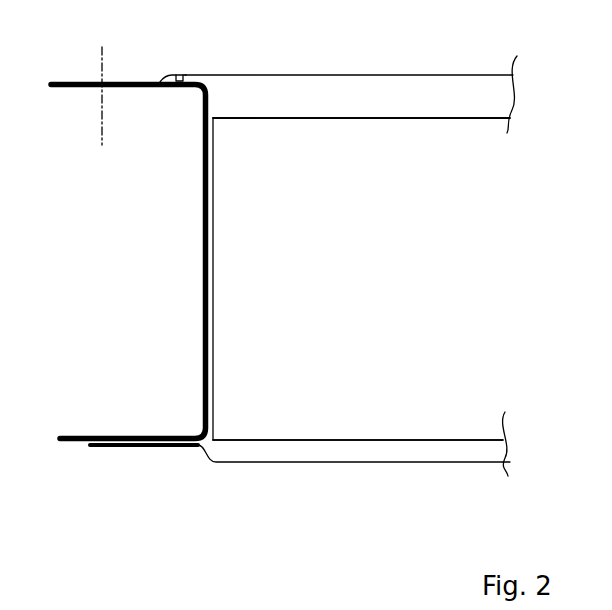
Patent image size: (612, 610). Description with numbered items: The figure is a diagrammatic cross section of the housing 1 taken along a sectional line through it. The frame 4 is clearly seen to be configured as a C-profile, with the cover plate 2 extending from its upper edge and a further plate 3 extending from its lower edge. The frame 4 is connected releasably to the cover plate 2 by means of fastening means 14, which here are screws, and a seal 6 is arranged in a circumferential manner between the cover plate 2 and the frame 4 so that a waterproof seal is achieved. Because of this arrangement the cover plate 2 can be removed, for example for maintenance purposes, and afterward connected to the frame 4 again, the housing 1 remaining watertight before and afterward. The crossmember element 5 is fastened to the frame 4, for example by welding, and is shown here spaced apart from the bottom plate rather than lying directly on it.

The housing 1 is at (433, 276).
The cover plate 2 is at (350, 75).
The lower flange plate 3 is at (343, 463).
The frame 4 is at (203, 265).
The crossmember element 5 is at (347, 118).
The seal 6 is at (180, 75).
The fastening means 14 is at (101, 68).